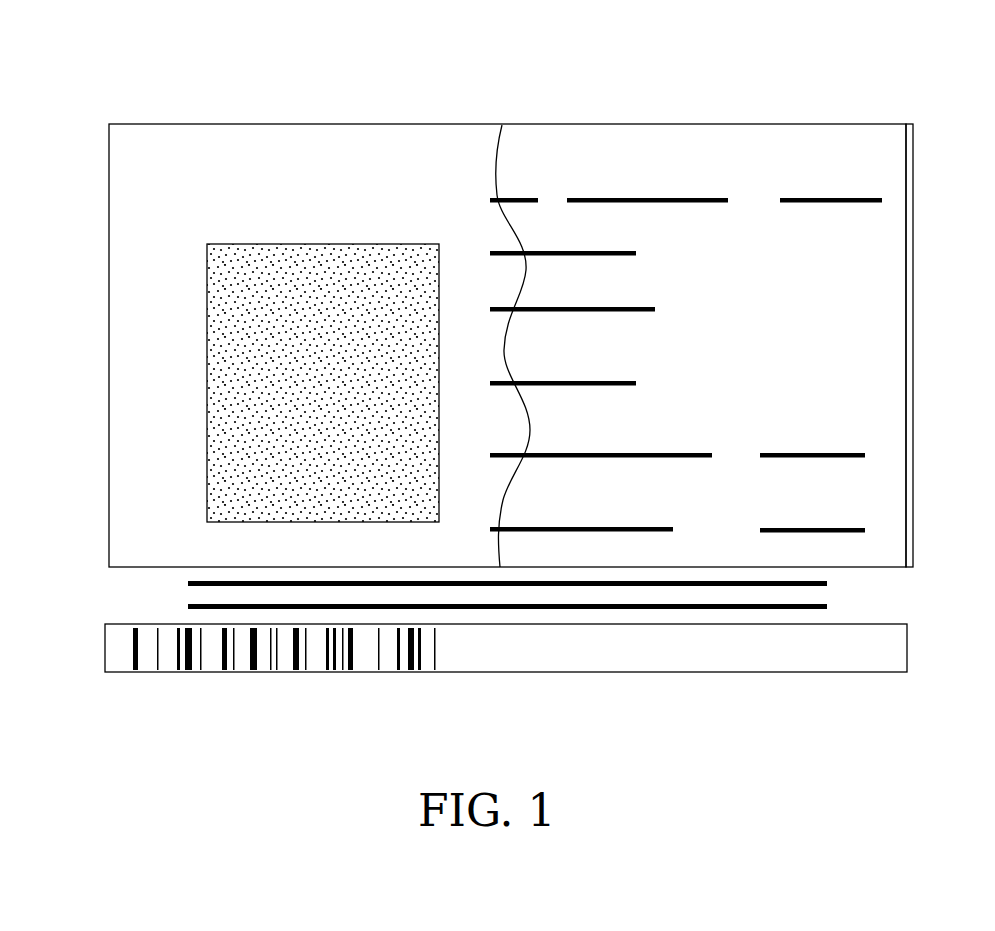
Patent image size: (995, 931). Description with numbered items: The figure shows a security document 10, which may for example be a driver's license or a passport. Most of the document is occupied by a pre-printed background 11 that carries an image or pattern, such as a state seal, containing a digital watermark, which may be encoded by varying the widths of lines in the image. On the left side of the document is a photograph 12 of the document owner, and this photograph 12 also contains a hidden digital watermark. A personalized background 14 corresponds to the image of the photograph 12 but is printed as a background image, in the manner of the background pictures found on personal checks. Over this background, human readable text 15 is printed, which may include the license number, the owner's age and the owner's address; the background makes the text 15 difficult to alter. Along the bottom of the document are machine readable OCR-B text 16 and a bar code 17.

The document 10 is at (509, 312).
The pre-printed background 11 is at (266, 148).
The photograph 12 is at (228, 365).
The personalized background 14 is at (877, 147).
The human readable text 15 is at (820, 453).
The machine readable OCR-B text 16 is at (216, 598).
The bar code 17 is at (134, 647).